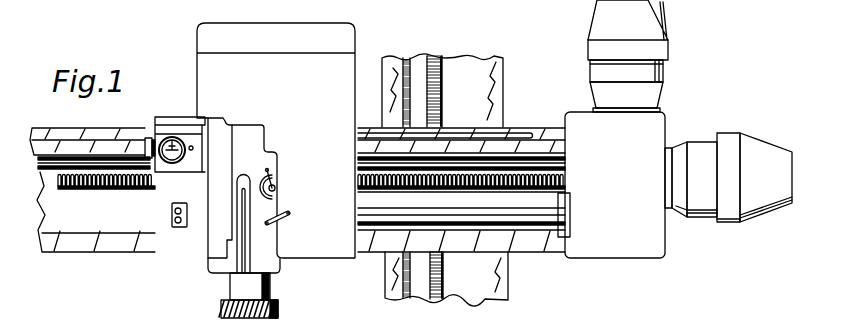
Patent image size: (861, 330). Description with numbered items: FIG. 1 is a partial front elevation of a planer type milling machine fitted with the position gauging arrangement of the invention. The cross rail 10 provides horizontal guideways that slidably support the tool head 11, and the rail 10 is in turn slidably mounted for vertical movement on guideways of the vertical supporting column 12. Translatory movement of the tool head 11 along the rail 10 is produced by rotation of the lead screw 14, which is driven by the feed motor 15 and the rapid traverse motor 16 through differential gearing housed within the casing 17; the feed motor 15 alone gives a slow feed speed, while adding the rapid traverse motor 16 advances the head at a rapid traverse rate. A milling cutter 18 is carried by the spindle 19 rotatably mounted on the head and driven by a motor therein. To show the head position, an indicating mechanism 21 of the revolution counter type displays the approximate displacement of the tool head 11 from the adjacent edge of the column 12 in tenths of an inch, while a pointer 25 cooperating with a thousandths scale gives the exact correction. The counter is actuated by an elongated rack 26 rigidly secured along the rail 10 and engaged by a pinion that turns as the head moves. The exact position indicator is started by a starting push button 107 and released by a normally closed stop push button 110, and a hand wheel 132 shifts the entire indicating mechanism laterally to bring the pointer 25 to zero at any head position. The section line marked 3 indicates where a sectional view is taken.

The section line of FIG. 3 is at (160, 95).
The cross rail 10 is at (110, 134).
The tool head 11 is at (367, 47).
The vertical supporting column 12 is at (497, 86).
The lead screw 14 is at (135, 191).
The feed motor 15 is at (663, 72).
The rapid traverse motor 16 is at (708, 142).
The casing 17 is at (657, 237).
The milling cutter 18 is at (222, 303).
The spindle 19 is at (270, 287).
The indicating mechanism 21 is at (202, 139).
The pointer 25 is at (188, 162).
The rack 26 is at (532, 134).
The starting push button 107 is at (172, 217).
The stop push button 110 is at (173, 228).
The hand wheel 132 is at (144, 134).